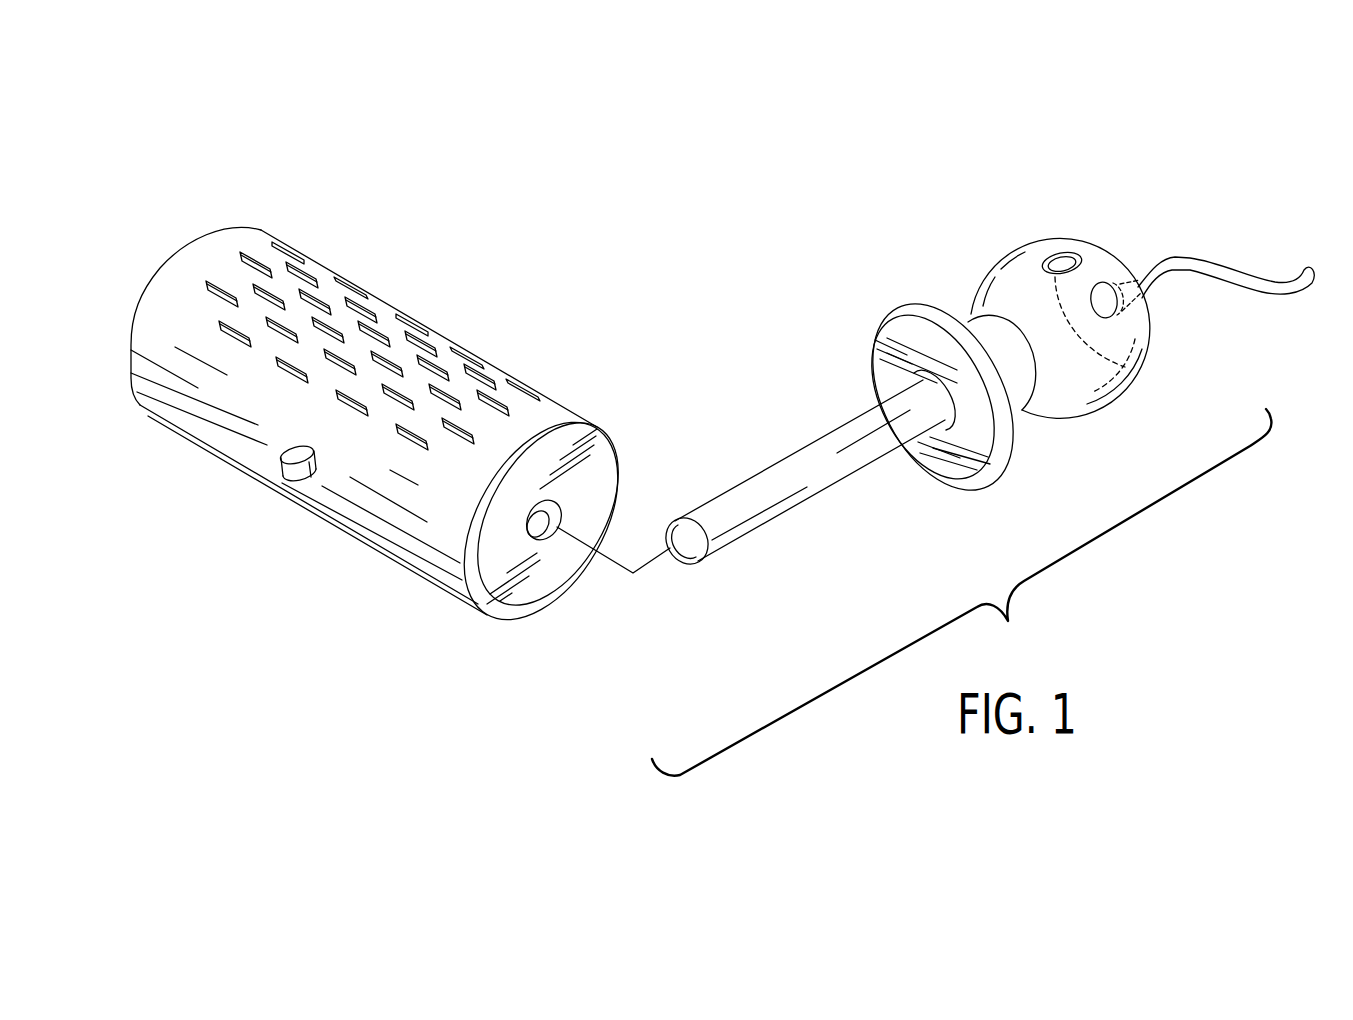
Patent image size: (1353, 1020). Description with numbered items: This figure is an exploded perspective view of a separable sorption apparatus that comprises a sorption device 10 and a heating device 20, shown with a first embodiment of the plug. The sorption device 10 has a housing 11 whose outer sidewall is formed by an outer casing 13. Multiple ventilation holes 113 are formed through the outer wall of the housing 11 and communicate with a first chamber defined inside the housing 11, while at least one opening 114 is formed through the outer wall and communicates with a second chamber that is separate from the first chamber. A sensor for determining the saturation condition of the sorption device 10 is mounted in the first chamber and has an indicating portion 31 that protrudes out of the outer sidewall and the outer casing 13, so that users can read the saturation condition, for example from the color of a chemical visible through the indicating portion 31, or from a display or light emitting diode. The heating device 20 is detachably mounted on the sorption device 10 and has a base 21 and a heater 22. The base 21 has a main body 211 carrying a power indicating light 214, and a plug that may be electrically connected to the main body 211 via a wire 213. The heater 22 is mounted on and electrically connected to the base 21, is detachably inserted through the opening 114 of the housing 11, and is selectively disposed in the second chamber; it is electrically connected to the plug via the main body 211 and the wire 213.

The sorption device 10 is at (498, 323).
The housing 11 is at (180, 240).
The outer casing 13 is at (362, 516).
The ventilation holes 113 is at (377, 337).
The opening 114 is at (545, 540).
The indicating portion 31 is at (292, 477).
The heating device 20 is at (986, 383).
The base 21 is at (1079, 353).
The main body 211 is at (1083, 393).
The wire 213 is at (1214, 284).
The power indicating light 214 is at (1068, 262).
The heater 22 is at (806, 468).